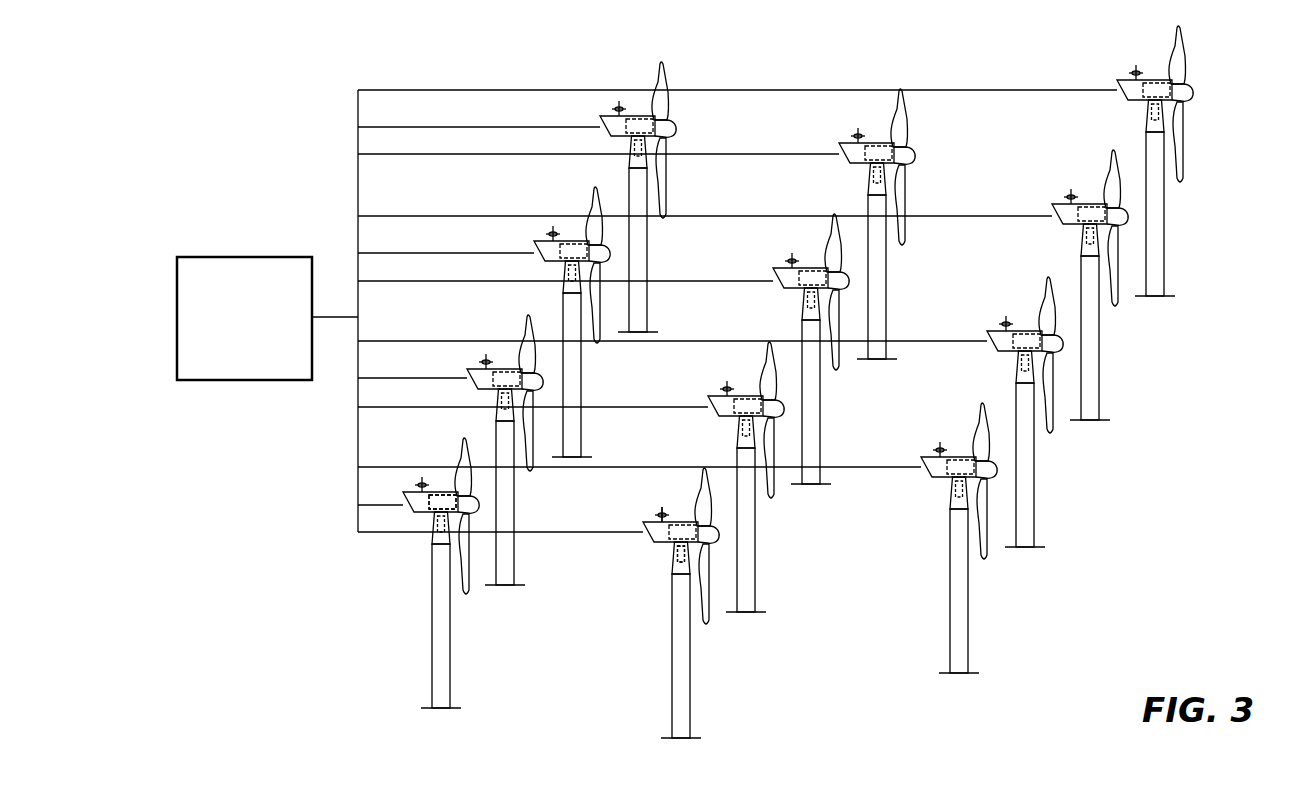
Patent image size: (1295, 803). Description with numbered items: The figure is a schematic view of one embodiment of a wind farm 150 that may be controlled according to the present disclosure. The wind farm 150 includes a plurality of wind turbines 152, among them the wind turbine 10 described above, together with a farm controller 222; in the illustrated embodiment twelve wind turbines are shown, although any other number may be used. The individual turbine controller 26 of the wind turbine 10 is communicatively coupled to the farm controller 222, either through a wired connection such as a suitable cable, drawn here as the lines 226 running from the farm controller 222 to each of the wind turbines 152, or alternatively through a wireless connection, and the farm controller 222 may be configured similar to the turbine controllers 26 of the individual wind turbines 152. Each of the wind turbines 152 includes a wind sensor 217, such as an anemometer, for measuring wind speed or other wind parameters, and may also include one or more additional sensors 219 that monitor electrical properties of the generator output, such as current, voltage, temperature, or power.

The wind farm 150 is at (270, 150).
The wind turbine 10 is at (453, 639).
The wind turbines 152 is at (515, 488).
The turbine controller 26 is at (443, 498).
The wind sensor 217 is at (656, 515).
The additional sensor 219 is at (672, 556).
The farm controller 222 is at (261, 328).
The communication links 226 is at (490, 160).